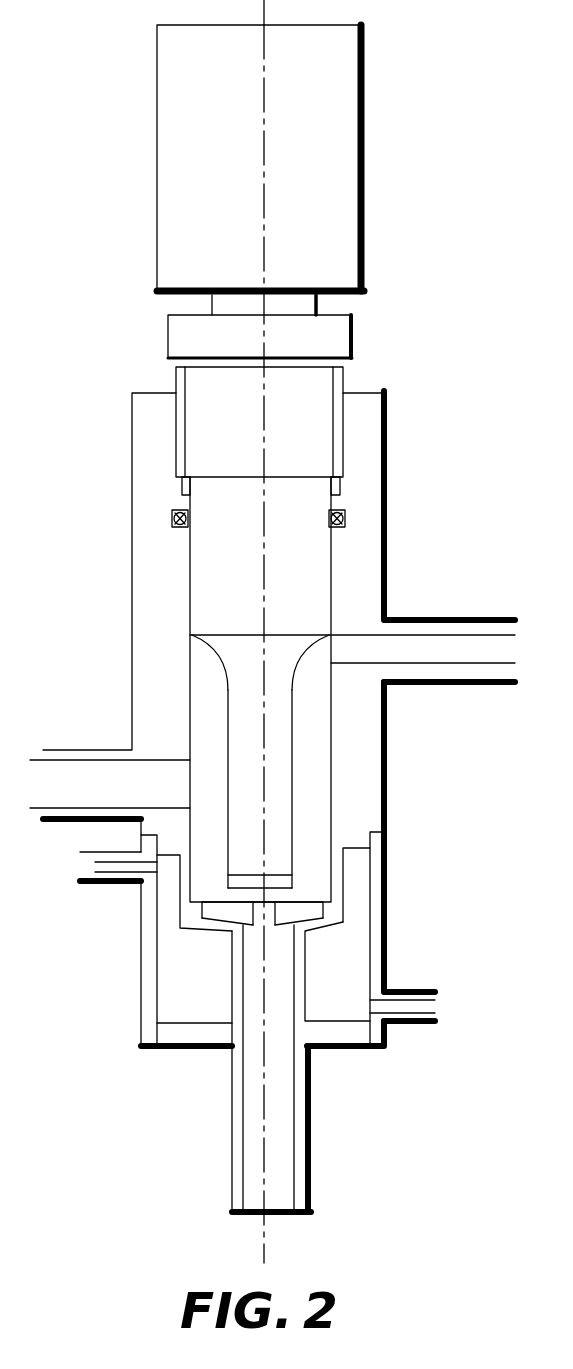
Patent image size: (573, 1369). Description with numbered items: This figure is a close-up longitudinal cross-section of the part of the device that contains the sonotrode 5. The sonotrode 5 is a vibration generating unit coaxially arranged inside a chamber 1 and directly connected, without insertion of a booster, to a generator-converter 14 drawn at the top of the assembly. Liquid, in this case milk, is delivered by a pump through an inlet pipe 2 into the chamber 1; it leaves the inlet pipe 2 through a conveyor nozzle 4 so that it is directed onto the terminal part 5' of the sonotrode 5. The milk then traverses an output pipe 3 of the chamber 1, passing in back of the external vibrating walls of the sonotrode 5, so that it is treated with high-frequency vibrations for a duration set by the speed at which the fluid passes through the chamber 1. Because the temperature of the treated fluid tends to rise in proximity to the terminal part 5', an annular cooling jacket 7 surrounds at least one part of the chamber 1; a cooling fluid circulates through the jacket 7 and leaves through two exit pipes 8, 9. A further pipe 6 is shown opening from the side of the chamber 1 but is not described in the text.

The chamber 1 is at (366, 763).
The inlet pipe 2 is at (282, 1177).
The output pipe 3 is at (66, 770).
The conveyor nozzle 4 is at (305, 913).
The sonotrode 5 is at (307, 689).
The terminal part 5' is at (206, 789).
The outlet pipe 6 is at (489, 645).
The annular cooling jacket 7 is at (355, 973).
The exit pipe 8 is at (418, 1010).
The exit pipe 9 is at (95, 863).
The generator-converter 14 is at (345, 186).